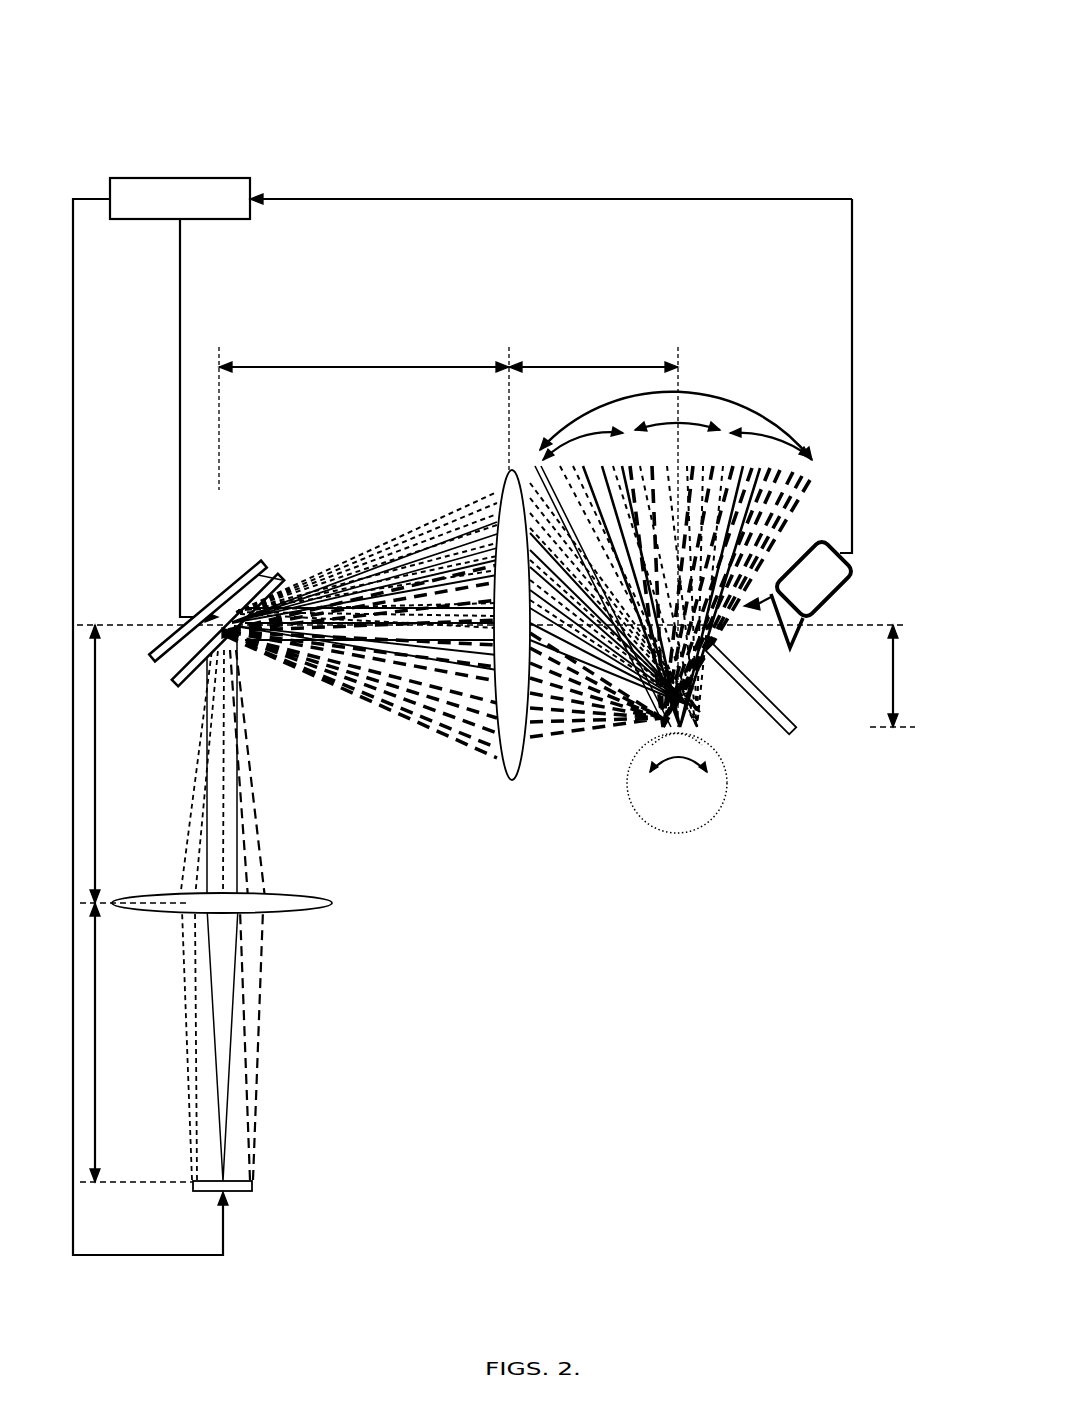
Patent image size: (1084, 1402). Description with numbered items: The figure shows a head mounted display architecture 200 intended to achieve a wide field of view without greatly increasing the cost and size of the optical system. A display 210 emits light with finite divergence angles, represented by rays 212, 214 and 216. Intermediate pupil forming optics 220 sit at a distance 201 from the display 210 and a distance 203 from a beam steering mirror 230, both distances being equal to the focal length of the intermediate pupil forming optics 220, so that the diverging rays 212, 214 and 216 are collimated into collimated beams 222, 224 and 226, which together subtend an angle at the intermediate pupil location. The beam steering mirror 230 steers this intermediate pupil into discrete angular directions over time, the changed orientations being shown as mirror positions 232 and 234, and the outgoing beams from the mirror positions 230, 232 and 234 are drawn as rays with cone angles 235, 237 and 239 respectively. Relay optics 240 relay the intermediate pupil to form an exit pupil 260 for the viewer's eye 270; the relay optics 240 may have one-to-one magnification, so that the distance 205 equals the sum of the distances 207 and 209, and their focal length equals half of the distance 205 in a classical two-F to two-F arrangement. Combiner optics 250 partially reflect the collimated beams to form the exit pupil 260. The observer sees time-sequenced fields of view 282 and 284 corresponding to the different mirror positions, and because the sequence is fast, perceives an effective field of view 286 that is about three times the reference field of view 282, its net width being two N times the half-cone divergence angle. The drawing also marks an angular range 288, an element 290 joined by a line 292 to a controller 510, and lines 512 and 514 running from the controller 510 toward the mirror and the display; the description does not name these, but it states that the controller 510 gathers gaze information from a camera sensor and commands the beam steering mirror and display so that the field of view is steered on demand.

The HMD architecture 200 is at (265, 56).
The distance 201 is at (111, 1042).
The distance 203 is at (111, 764).
The distance 205 is at (338, 367).
The distance 207 is at (562, 365).
The distance 209 is at (867, 676).
The display 210 is at (228, 1198).
The ray 212 is at (262, 1020).
The ray 214 is at (232, 1105).
The ray 216 is at (187, 1018).
The intermediate pupil forming optics 220 is at (330, 905).
The collimated beam 222 is at (250, 752).
The collimated beam 224 is at (238, 810).
The collimated beam 226 is at (194, 752).
The BSM 230 is at (160, 652).
The BSM angular orientation 232 is at (276, 558).
The BSM angular orientation 234 is at (258, 563).
The cone angle of outgoing beams 235 is at (420, 728).
The cone angle of outgoing beams 237 is at (386, 607).
The cone angle of outgoing beams 239 is at (466, 505).
The relay optics 240 is at (497, 760).
The combiner optics 250 is at (792, 710).
The exit pupil 260 is at (700, 735).
The viewer's eye 270 is at (728, 793).
The time-sequenced FOV 282 is at (697, 424).
The time-sequenced FOV 284 is at (543, 452).
The effective FOV 286 is at (786, 430).
The total scan angular range 288 is at (693, 392).
The camera 290 is at (853, 577).
The camera signal line to controller 292 is at (551, 363).
The controller 510 is at (160, 178).
The controller signal line to scanning mirror 512 is at (179, 420).
The controller signal line to light source 514 is at (150, 727).